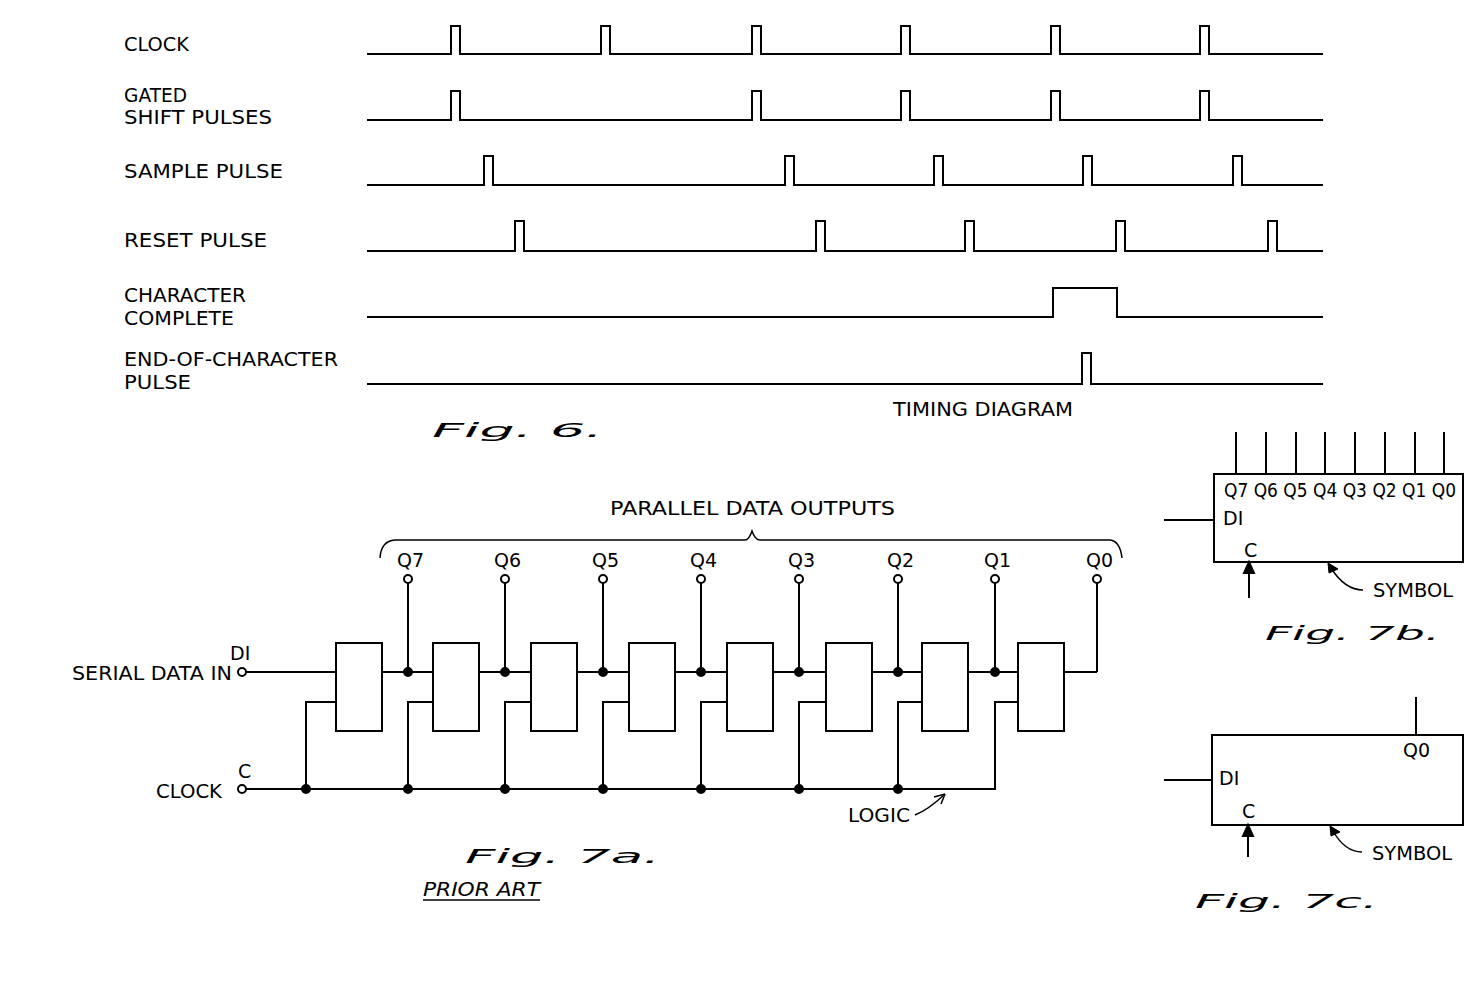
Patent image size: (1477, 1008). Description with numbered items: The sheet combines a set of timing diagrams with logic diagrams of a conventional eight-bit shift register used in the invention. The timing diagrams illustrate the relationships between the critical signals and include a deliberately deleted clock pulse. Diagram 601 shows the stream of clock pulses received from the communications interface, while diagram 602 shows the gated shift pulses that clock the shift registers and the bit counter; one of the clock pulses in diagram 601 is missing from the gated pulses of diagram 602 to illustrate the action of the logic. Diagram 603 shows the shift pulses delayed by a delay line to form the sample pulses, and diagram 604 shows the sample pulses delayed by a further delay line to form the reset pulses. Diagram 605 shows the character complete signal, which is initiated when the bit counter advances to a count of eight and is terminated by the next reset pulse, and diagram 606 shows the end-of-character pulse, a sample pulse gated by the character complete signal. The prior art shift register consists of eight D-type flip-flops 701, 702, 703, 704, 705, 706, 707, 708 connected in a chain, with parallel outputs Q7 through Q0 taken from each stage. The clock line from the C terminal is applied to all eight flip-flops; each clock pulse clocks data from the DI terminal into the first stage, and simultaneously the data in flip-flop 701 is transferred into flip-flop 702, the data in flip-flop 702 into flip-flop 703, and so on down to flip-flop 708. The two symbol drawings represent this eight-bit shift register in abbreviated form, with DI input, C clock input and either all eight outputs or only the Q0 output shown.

In FIG. 6, the clock pulse diagram 601 is at (1322, 54).
In FIG. 6, the gated shift pulse diagram 602 is at (1322, 120).
In FIG. 6, the sample pulse diagram 603 is at (1322, 185).
In FIG. 6, the reset pulse diagram 604 is at (1322, 251).
In FIG. 6, the character complete signal diagram 605 is at (1322, 317).
In FIG. 6, the end-of-character pulse diagram 606 is at (1322, 384).
In FIG. 7A, the flip-flop 701 is at (363, 643).
In FIG. 7A, the flip-flop 702 is at (460, 643).
In FIG. 7A, the flip-flop 703 is at (558, 643).
In FIG. 7A, the flip-flop 704 is at (656, 643).
In FIG. 7A, the flip-flop 705 is at (754, 643).
In FIG. 7A, the flip-flop 706 is at (853, 643).
In FIG. 7A, the flip-flop 707 is at (949, 643).
In FIG. 7A, the flip-flop 708 is at (1045, 643).